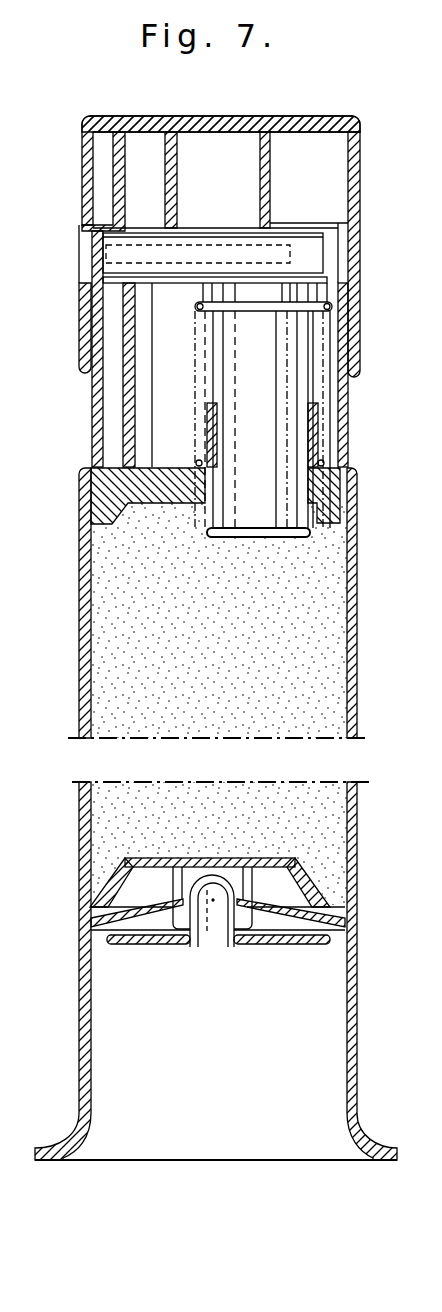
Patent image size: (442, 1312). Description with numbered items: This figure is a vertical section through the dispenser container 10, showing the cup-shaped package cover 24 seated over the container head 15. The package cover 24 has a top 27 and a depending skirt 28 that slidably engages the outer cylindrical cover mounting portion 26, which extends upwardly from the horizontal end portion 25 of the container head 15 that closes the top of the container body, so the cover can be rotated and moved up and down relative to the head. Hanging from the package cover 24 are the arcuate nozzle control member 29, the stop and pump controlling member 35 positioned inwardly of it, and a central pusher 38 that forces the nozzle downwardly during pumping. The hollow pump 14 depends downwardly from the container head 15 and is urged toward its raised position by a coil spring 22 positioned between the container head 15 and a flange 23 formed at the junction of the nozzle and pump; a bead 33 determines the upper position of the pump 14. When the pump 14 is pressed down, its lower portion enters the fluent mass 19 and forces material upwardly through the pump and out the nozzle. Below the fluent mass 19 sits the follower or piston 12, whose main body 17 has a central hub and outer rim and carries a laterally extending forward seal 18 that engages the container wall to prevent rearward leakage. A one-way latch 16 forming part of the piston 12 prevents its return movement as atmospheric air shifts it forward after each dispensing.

The container 10 is at (366, 610).
The follower 12 is at (328, 882).
The pump 14 is at (293, 440).
The container head 15 is at (353, 397).
The one-way latch 16 is at (313, 912).
The main body 17 is at (302, 857).
The forward seal 18 is at (85, 895).
The fluent mass 19 is at (233, 668).
The coil spring 22 is at (332, 308).
The flange 23 is at (327, 288).
The package cover 24 is at (363, 130).
The horizontal end portion 25 is at (168, 465).
The cover mounting portion 26 is at (92, 400).
The top 27 is at (265, 115).
The depending skirt 28 is at (357, 197).
The nozzle control member 29 is at (113, 187).
The bead 33 is at (207, 530).
The stop and pump controlling member 35 is at (131, 352).
The pusher 38 is at (272, 175).